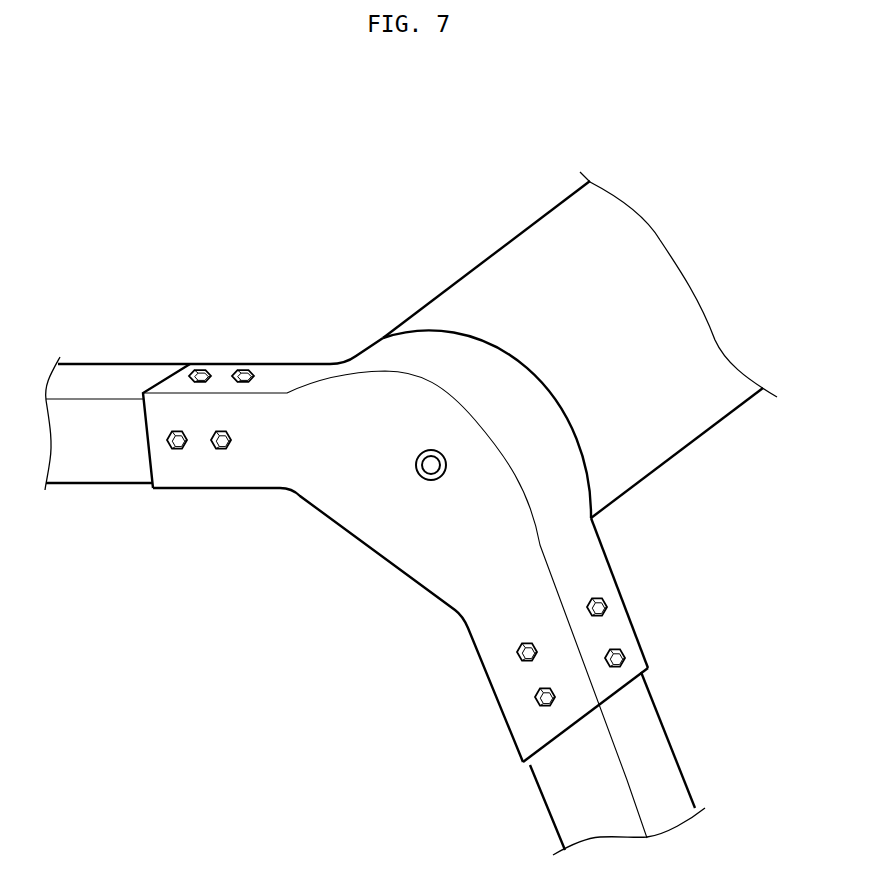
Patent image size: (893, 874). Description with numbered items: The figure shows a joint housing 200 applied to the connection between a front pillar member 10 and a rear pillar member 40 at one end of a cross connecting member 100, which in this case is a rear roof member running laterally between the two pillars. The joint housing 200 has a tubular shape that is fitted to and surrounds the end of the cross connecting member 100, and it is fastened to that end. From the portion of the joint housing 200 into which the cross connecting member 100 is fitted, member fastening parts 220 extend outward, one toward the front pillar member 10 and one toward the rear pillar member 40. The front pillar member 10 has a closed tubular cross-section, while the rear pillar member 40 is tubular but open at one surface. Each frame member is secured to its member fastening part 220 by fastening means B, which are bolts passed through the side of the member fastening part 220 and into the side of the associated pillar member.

The front pillar member 10 is at (90, 377).
The cross connecting member 100 is at (522, 231).
The joint housing 200 is at (362, 362).
The member fastening part 220 is at (220, 376).
The rear pillar member 40 is at (655, 750).
The fastening means B is at (218, 447).